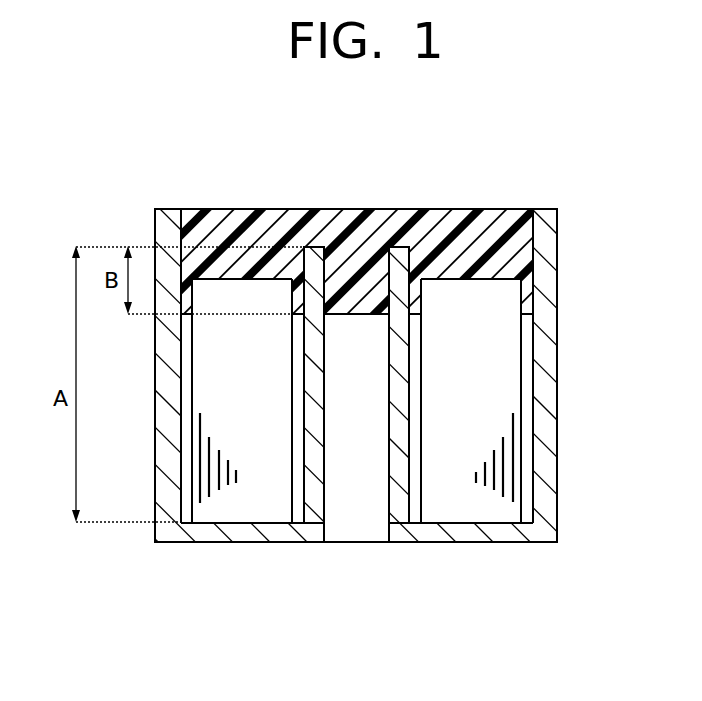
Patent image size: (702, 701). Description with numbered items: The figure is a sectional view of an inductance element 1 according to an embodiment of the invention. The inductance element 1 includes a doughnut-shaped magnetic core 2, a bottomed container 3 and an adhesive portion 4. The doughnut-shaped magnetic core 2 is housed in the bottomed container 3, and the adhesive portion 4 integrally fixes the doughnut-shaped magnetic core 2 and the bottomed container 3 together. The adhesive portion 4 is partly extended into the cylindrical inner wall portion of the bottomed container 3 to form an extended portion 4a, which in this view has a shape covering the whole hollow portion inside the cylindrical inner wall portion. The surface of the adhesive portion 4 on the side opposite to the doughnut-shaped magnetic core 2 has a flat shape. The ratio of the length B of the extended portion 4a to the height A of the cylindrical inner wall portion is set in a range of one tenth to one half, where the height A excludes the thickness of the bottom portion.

The inductance element 1 is at (561, 172).
The doughnut-shaped magnetic core 2 is at (510, 375).
The bottomed container 3 is at (548, 317).
The adhesive portion 4 is at (441, 218).
The extended portion 4a is at (348, 305).